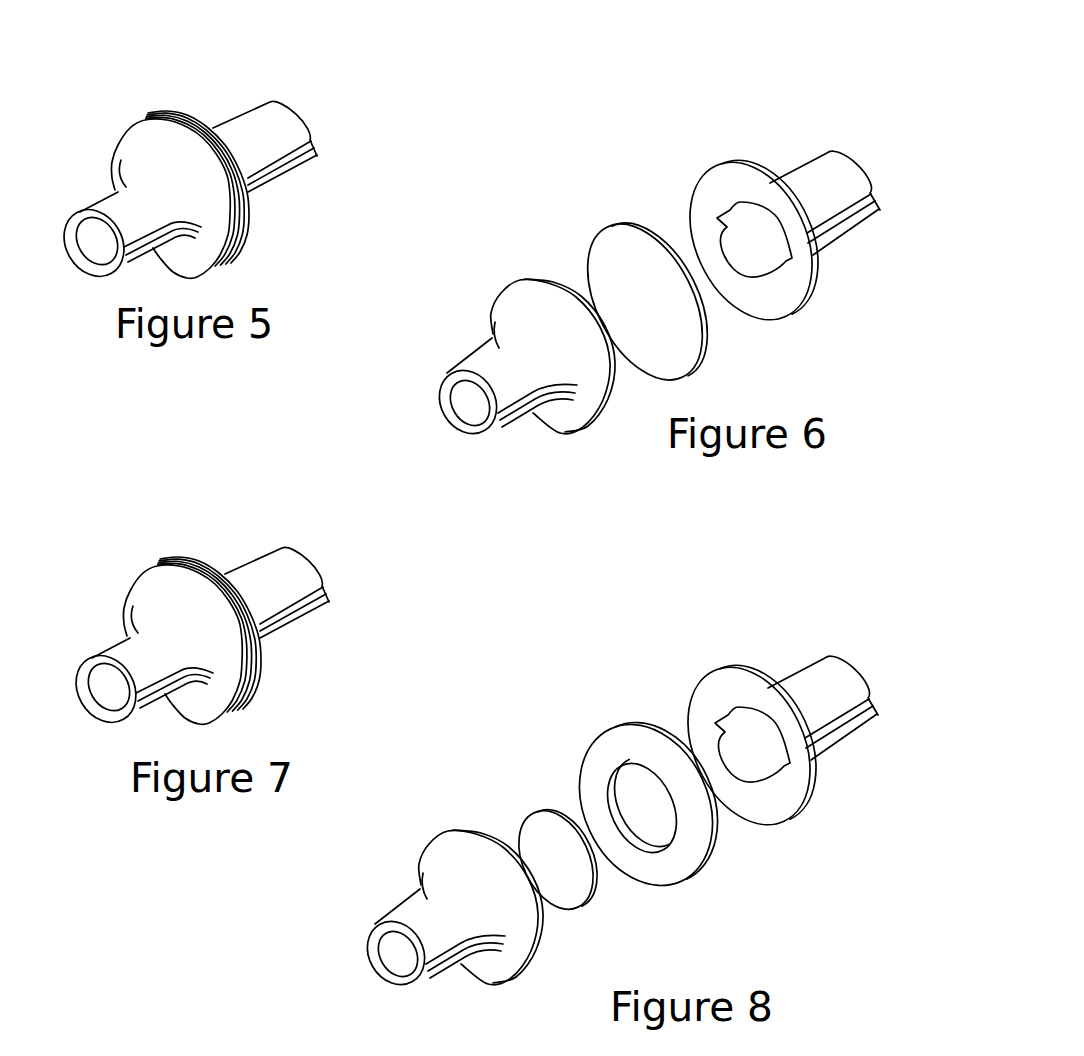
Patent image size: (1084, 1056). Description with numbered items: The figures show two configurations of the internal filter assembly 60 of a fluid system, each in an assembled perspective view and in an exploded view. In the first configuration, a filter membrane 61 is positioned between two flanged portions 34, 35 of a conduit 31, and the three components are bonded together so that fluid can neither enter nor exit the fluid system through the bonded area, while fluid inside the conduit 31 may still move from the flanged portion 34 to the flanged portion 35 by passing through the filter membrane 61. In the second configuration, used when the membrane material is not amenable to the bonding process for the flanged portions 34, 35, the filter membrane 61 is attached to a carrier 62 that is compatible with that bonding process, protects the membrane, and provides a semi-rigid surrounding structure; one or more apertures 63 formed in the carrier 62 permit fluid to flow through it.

In FIG. 5, the conduit 31 is at (240, 113).
In FIG. 7, the conduit 31 is at (196, 609).
In FIG. 6, the conduit 31 is at (463, 367).
In FIG. 8, the conduit 31 is at (397, 916).
In FIG. 5, the flanged portion 34 is at (190, 113).
In FIG. 7, the flanged portion 34 is at (209, 603).
In FIG. 6, the flanged portion 34 is at (747, 163).
In FIG. 8, the flanged portion 34 is at (755, 671).
In FIG. 5, the flanged portion 35 is at (135, 139).
In FIG. 7, the flanged portion 35 is at (181, 619).
In FIG. 6, the flanged portion 35 is at (523, 300).
In FIG. 8, the flanged portion 35 is at (438, 849).
In FIG. 5, the internal filter assembly 60 is at (202, 163).
In FIG. 7, the internal filter assembly 60 is at (214, 609).
In FIG. 6, the internal filter assembly 60 is at (652, 269).
In FIG. 8, the internal filter assembly 60 is at (614, 796).
In FIG. 5, the filter membrane 61 is at (250, 218).
In FIG. 6, the filter membrane 61 is at (610, 227).
In FIG. 8, the filter membrane 61 is at (533, 816).
In FIG. 7, the carrier 62 is at (251, 636).
In FIG. 8, the carrier 62 is at (625, 718).
In FIG. 8, the aperture 63 is at (610, 771).